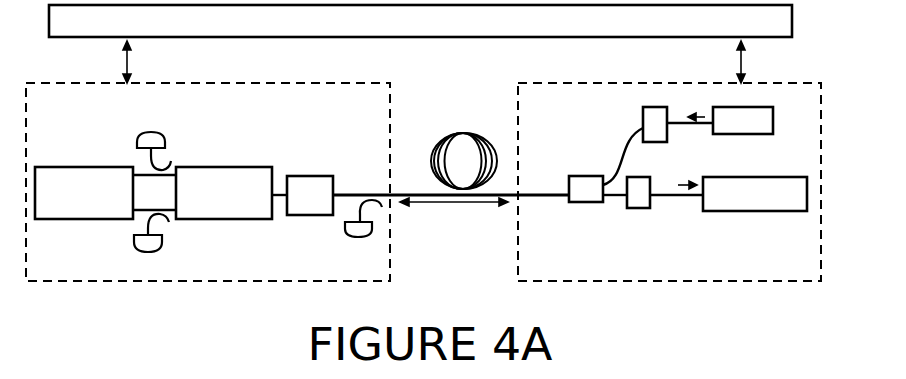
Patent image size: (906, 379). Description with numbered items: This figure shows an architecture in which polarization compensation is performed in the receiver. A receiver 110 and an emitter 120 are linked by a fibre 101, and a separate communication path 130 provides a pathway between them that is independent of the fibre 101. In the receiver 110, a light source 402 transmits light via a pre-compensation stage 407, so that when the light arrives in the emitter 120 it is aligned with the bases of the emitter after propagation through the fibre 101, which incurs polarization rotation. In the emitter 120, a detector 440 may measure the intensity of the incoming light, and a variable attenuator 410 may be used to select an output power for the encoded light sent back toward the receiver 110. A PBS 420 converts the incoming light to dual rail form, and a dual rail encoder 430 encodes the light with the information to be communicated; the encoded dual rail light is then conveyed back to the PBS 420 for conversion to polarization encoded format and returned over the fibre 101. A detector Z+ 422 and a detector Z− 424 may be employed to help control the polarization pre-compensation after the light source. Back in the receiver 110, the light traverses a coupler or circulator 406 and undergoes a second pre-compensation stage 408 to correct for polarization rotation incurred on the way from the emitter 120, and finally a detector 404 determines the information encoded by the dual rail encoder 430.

The communication path 130 is at (445, 33).
The emitter 120 is at (208, 182).
The receiver 110 is at (669, 182).
The fibre 101 is at (463, 203).
The dual rail encoder 430 is at (63, 207).
The PBS 420 is at (203, 207).
The detector Z+ 422 is at (158, 134).
The detector Z− 424 is at (156, 247).
The variable attenuator 410 is at (312, 184).
The detector 440 is at (354, 236).
The coupler or circulator 406 is at (586, 182).
The pre-compensation stage 407 is at (645, 116).
The second pre-compensation stage 408 is at (637, 202).
The light source 402 is at (743, 121).
The detector 404 is at (734, 206).